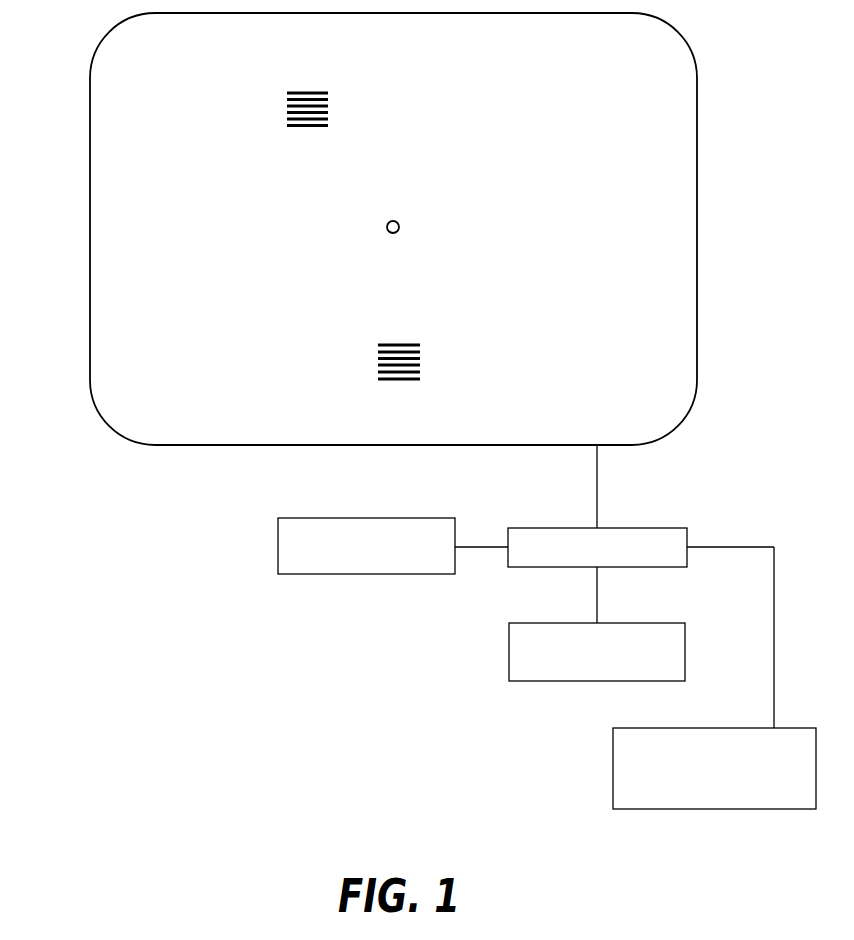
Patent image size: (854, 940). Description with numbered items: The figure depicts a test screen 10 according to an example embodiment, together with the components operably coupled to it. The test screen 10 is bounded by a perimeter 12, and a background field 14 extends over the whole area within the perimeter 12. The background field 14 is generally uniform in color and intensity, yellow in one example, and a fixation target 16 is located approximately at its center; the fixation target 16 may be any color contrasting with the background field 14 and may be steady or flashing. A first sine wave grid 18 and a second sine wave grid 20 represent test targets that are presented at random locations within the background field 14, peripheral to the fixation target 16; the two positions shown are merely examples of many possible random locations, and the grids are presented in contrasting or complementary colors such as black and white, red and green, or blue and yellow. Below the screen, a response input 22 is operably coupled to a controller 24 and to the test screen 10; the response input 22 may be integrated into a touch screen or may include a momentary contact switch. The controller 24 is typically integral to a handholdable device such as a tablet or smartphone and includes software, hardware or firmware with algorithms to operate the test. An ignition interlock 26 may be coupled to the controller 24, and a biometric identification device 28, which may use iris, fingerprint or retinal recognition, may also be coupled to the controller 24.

The test screen 10 is at (373, 460).
The perimeter 12 is at (157, 445).
The background field 14 is at (307, 415).
The fixation target 16 is at (386, 227).
The first sine wave grid 18 is at (287, 102).
The second sine wave grid 20 is at (378, 360).
The response input 22 is at (509, 645).
The controller 24 is at (508, 558).
The ignition interlock 26 is at (293, 575).
The biometric identification device 28 is at (612, 773).